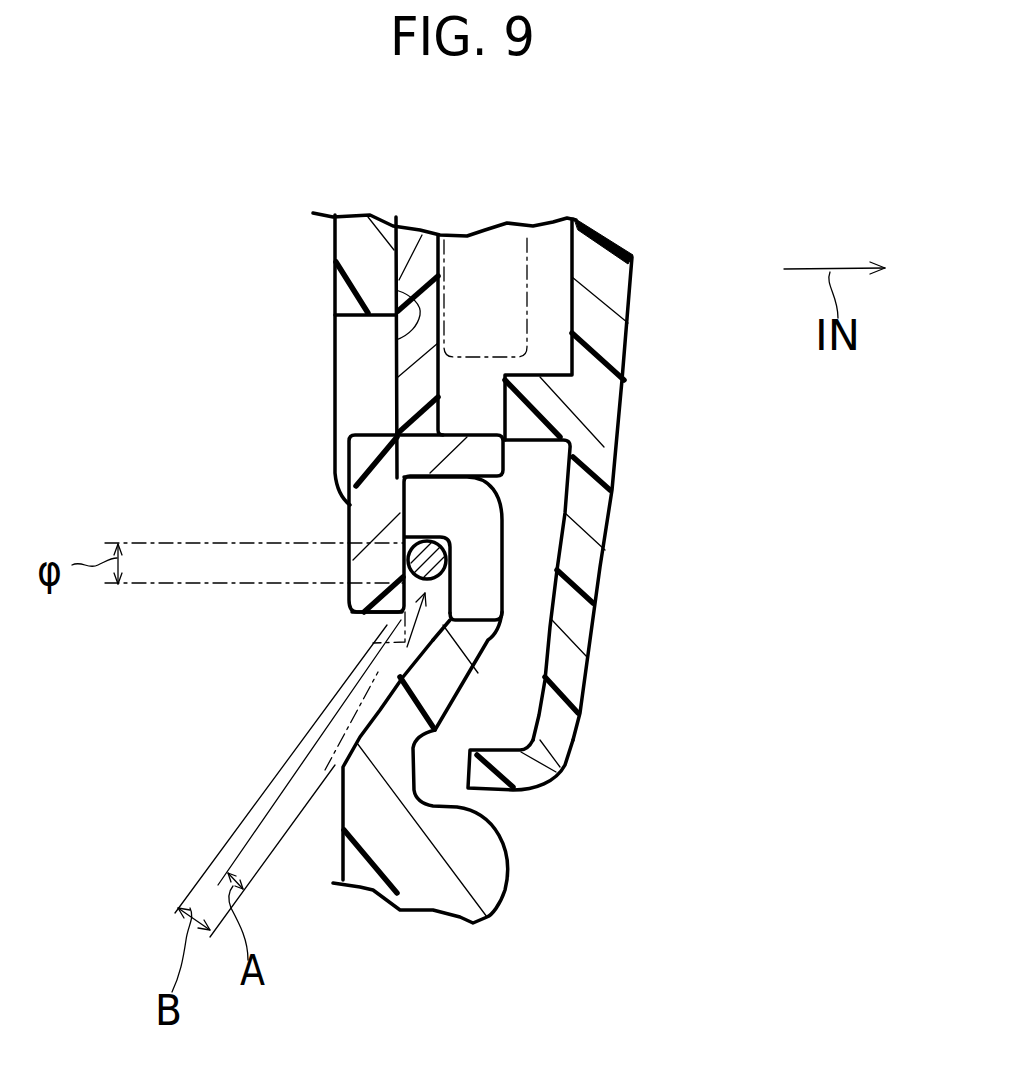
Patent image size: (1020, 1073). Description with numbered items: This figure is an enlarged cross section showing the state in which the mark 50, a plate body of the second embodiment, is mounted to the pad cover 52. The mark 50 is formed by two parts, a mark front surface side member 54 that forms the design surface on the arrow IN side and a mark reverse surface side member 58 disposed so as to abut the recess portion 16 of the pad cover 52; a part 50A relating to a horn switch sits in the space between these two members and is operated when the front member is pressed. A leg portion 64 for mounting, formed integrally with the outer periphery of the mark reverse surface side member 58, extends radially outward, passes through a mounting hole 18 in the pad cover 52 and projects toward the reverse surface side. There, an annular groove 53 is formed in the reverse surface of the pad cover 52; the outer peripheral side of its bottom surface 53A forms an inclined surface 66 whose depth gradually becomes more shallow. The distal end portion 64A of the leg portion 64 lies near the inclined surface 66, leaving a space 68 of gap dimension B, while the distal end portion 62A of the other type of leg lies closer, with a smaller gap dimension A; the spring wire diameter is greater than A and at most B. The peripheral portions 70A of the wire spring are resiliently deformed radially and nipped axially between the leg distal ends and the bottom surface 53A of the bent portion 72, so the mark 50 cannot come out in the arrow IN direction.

The mark 50 is at (667, 277).
The part relating to a horn switch 50A is at (527, 268).
The mark reverse surface side member 58 is at (448, 264).
The mark front surface side member 54 is at (622, 404).
The inclined surface 66 is at (548, 780).
The recess portion 16 is at (397, 343).
The mounting holes 18 is at (364, 387).
The leg portion for mounting 64 is at (342, 521).
The distal end portion 64A is at (403, 612).
The peripheral portions 70A is at (450, 568).
The bent portion 72 is at (450, 522).
The space 68 is at (443, 623).
The bottom surface 53A is at (457, 593).
The annular groove 53 is at (383, 622).
The distal end portion 62A is at (373, 643).
The pad cover 52 is at (515, 881).